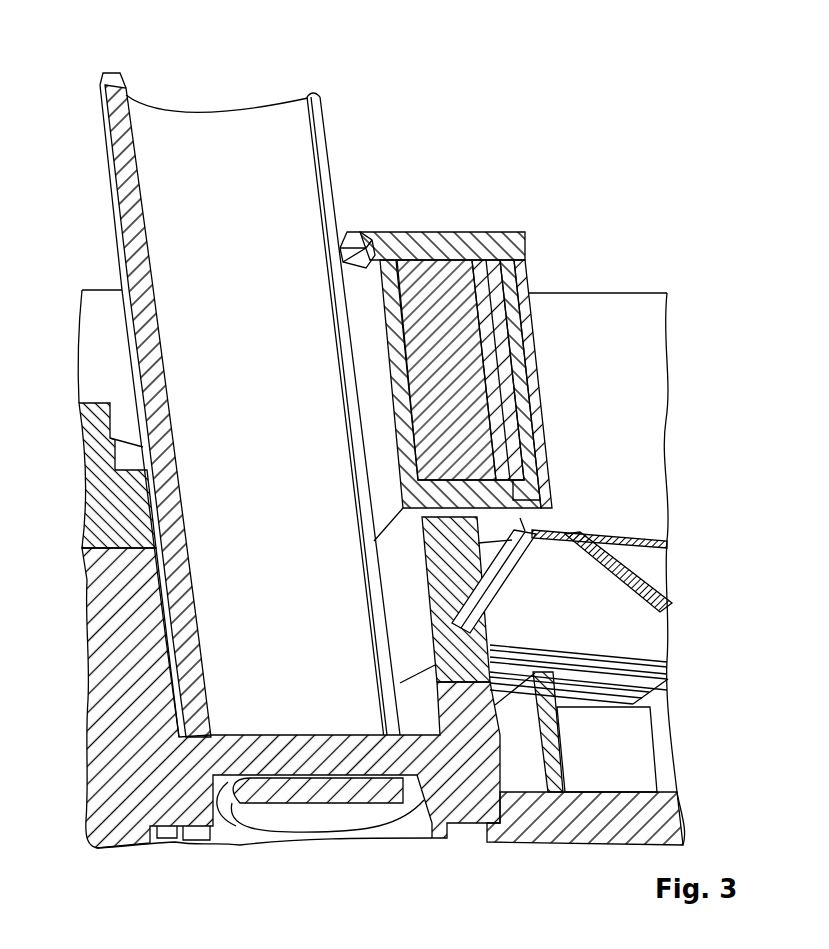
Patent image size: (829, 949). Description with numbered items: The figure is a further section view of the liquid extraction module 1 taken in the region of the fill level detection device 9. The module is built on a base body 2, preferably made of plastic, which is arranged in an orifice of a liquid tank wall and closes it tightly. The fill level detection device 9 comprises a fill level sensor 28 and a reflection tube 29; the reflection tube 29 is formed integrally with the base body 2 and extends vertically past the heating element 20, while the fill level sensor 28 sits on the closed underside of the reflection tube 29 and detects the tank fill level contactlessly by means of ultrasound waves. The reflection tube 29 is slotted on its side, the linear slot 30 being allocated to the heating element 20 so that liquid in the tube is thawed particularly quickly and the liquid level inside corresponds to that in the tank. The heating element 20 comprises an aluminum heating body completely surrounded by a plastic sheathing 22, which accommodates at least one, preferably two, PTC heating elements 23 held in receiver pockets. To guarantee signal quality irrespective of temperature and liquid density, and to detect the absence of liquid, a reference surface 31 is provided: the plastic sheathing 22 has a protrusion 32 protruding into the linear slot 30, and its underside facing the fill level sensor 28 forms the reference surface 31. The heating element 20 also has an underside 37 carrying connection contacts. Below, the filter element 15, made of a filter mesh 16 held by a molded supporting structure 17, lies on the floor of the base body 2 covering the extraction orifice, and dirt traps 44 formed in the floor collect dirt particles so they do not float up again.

The liquid extraction module 1 is at (553, 140).
The base body 2 is at (472, 778).
The fill level detection device 9 is at (446, 329).
The filter element 15 is at (673, 634).
The filter mesh 16 is at (540, 585).
The supporting structure 17 is at (477, 638).
The heating element 20 is at (607, 318).
The plastic sheathing 22 is at (493, 330).
The PTC heating element 23 is at (490, 290).
The fill level sensor 28 is at (323, 790).
The reflection tube 29 is at (278, 168).
The linear slot 30 is at (367, 477).
The reference surface 31 is at (389, 233).
The protrusion 32 is at (373, 233).
The underside 37 is at (520, 528).
The dirt trap 44 is at (593, 773).